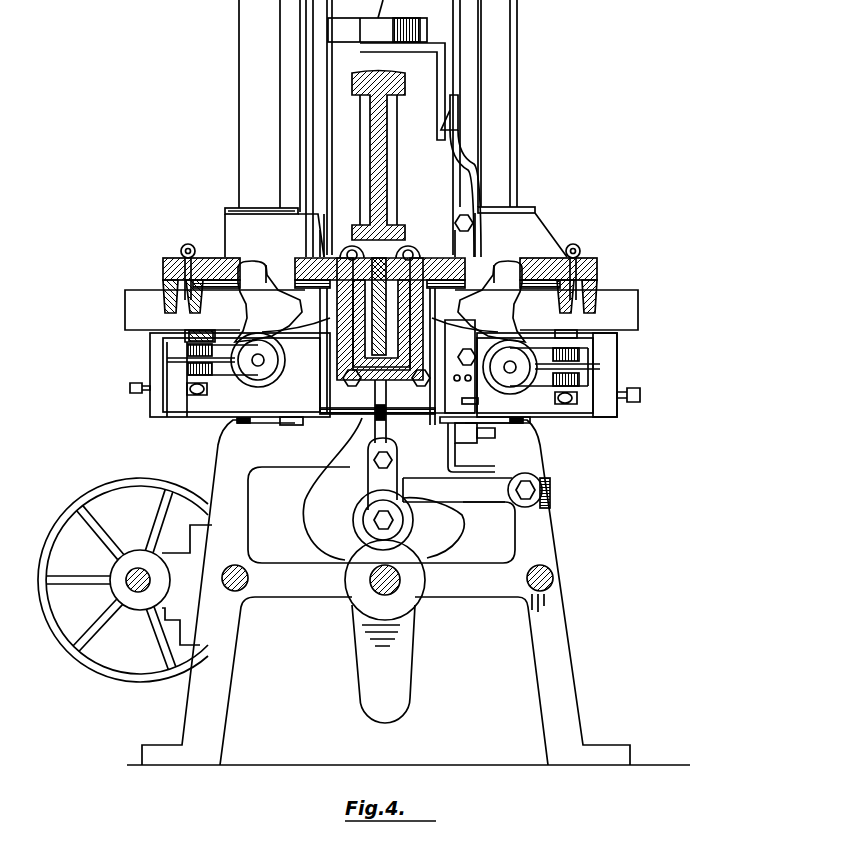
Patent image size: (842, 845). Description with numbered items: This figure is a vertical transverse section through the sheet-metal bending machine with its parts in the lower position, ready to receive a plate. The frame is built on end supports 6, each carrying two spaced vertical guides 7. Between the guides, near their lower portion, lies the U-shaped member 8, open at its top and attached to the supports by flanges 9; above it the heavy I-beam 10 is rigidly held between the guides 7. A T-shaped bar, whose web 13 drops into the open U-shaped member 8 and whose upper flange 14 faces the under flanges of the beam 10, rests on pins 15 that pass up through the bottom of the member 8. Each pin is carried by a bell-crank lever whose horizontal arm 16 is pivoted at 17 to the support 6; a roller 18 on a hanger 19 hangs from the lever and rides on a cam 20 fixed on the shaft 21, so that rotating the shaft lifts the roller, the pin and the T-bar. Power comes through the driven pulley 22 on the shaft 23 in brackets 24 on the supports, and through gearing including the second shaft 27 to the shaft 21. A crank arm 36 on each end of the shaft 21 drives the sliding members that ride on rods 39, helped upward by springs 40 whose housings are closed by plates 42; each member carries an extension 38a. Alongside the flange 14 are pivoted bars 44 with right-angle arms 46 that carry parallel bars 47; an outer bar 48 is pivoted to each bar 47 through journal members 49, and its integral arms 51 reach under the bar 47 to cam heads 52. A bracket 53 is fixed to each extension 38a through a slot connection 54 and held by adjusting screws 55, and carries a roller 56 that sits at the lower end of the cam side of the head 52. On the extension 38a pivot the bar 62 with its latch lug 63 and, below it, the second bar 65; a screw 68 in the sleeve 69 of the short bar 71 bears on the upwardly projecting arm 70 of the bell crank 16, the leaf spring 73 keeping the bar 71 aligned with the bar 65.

The end support 6 is at (547, 542).
The guide 7 is at (293, 106).
The U-shaped member 8 is at (372, 412).
The flange 9 is at (420, 398).
The I-beam 10 is at (382, 168).
The web 13 is at (382, 336).
The upper horizontal flange 14 is at (386, 250).
The pin 15 is at (350, 473).
The horizontal arm of bell-crank lever 16 is at (476, 496).
The pivot 17 is at (531, 492).
The roller 18 is at (412, 526).
The hanger 19 is at (377, 486).
The cam 20 is at (356, 593).
The shaft 21 is at (396, 588).
The driven pulley 22 is at (89, 652).
The shaft 23 is at (127, 590).
The bracket 24 is at (153, 562).
The second shaft 27 is at (238, 591).
The crank arm 36 is at (373, 656).
The extension 38a is at (226, 228).
The rod 39 is at (239, 87).
The spring 40 is at (237, 422).
The plate 42 is at (252, 207).
The bar 44 is at (327, 250).
The arm 46 is at (278, 290).
The bar 47 is at (219, 268).
The bar 48 is at (166, 264).
The journal member 49 is at (185, 248).
The arm 51 is at (183, 318).
The cam head 52 is at (249, 303).
The bracket 53 is at (212, 354).
The set screw and slot connection 54 is at (202, 385).
The adjusting screw 55 is at (147, 392).
The roller 56 is at (262, 388).
The bar 62 is at (466, 178).
The latch lug 63 is at (456, 114).
The second bar 65 is at (472, 336).
The screw 68 is at (452, 440).
The sleeve 69 is at (498, 428).
The upwardly projecting arm 70 is at (445, 447).
The short bar 71 is at (455, 423).
The leaf spring 73 is at (478, 401).